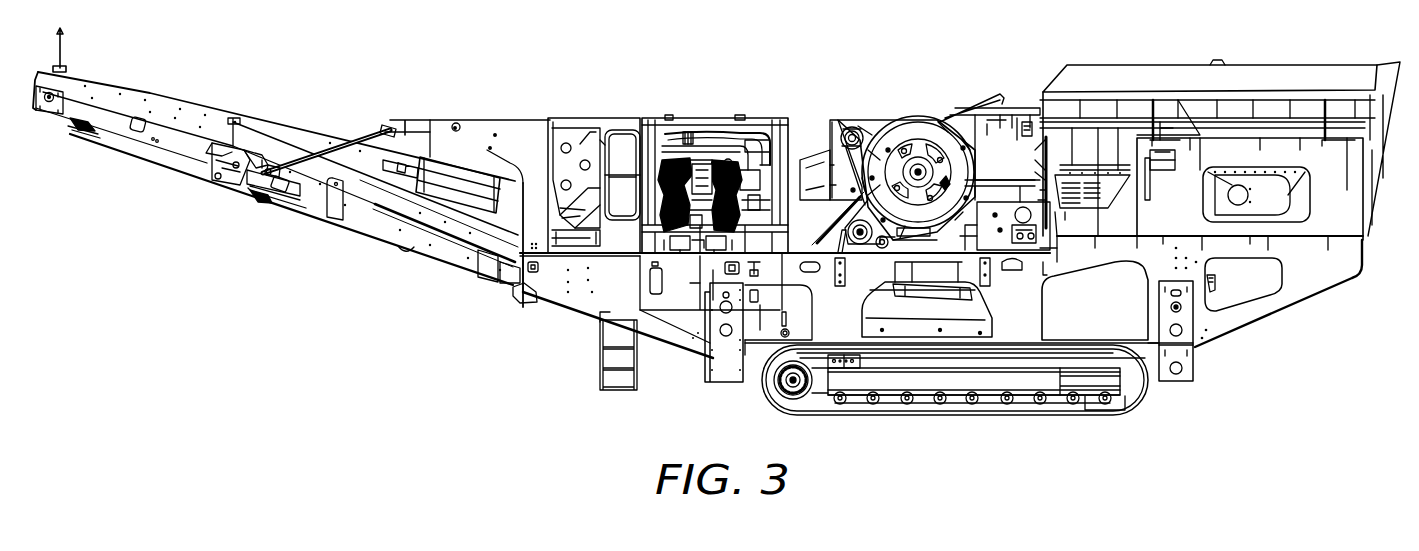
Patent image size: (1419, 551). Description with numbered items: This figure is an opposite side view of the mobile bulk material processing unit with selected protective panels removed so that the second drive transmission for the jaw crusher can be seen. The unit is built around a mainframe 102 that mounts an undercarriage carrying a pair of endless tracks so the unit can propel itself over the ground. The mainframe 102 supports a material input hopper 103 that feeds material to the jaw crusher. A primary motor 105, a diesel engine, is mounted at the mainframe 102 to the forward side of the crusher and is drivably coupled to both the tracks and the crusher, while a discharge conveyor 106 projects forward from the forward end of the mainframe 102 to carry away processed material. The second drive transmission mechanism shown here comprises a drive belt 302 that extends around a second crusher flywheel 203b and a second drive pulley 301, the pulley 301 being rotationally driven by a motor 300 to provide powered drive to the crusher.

The mainframe 102 is at (1018, 325).
The material input hopper 103 is at (1141, 402).
The primary motor 105 is at (721, 140).
The discharge conveyor 106 is at (184, 152).
The motor 300 is at (856, 101).
The second drive pulley 301 is at (836, 125).
The drive belt 302 is at (879, 120).
The second crusher flywheel 203b is at (936, 125).